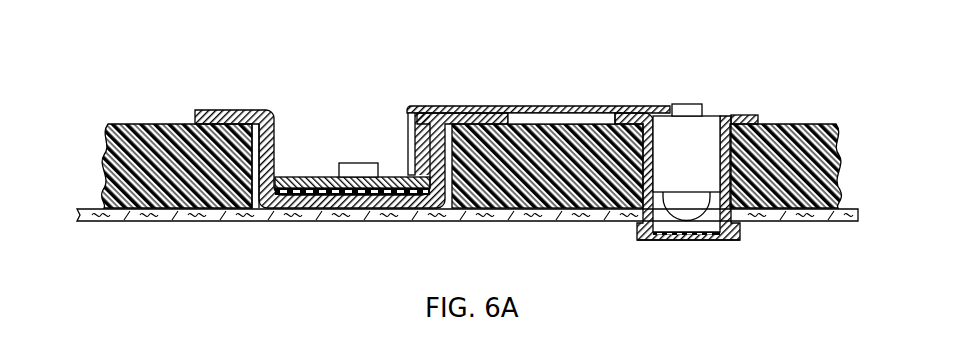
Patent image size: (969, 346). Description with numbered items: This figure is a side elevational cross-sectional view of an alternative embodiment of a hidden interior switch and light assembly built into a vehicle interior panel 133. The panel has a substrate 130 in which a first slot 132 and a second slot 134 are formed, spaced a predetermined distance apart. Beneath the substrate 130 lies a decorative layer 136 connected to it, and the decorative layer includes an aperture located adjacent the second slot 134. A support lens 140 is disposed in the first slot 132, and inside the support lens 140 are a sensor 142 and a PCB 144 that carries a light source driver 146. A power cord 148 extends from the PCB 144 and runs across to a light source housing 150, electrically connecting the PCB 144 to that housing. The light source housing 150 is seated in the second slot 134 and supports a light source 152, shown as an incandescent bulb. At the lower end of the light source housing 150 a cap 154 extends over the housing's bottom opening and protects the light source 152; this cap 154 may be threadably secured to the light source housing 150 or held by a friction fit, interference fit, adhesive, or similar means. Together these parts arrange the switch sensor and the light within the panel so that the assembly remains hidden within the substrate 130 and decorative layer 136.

The vehicle interior panel 133 is at (124, 72).
The substrate 130 is at (817, 123).
The first slot 132 is at (256, 192).
The second slot 134 is at (667, 153).
The decorative layer 136 is at (853, 209).
The support lens 140 is at (229, 110).
The sensor 142 is at (397, 203).
The PCB 144 is at (300, 177).
The light source driver 146 is at (353, 163).
The power cord 148 is at (538, 105).
The light source housing 150 is at (742, 115).
The light source 152 is at (680, 205).
The cap 154 is at (740, 233).